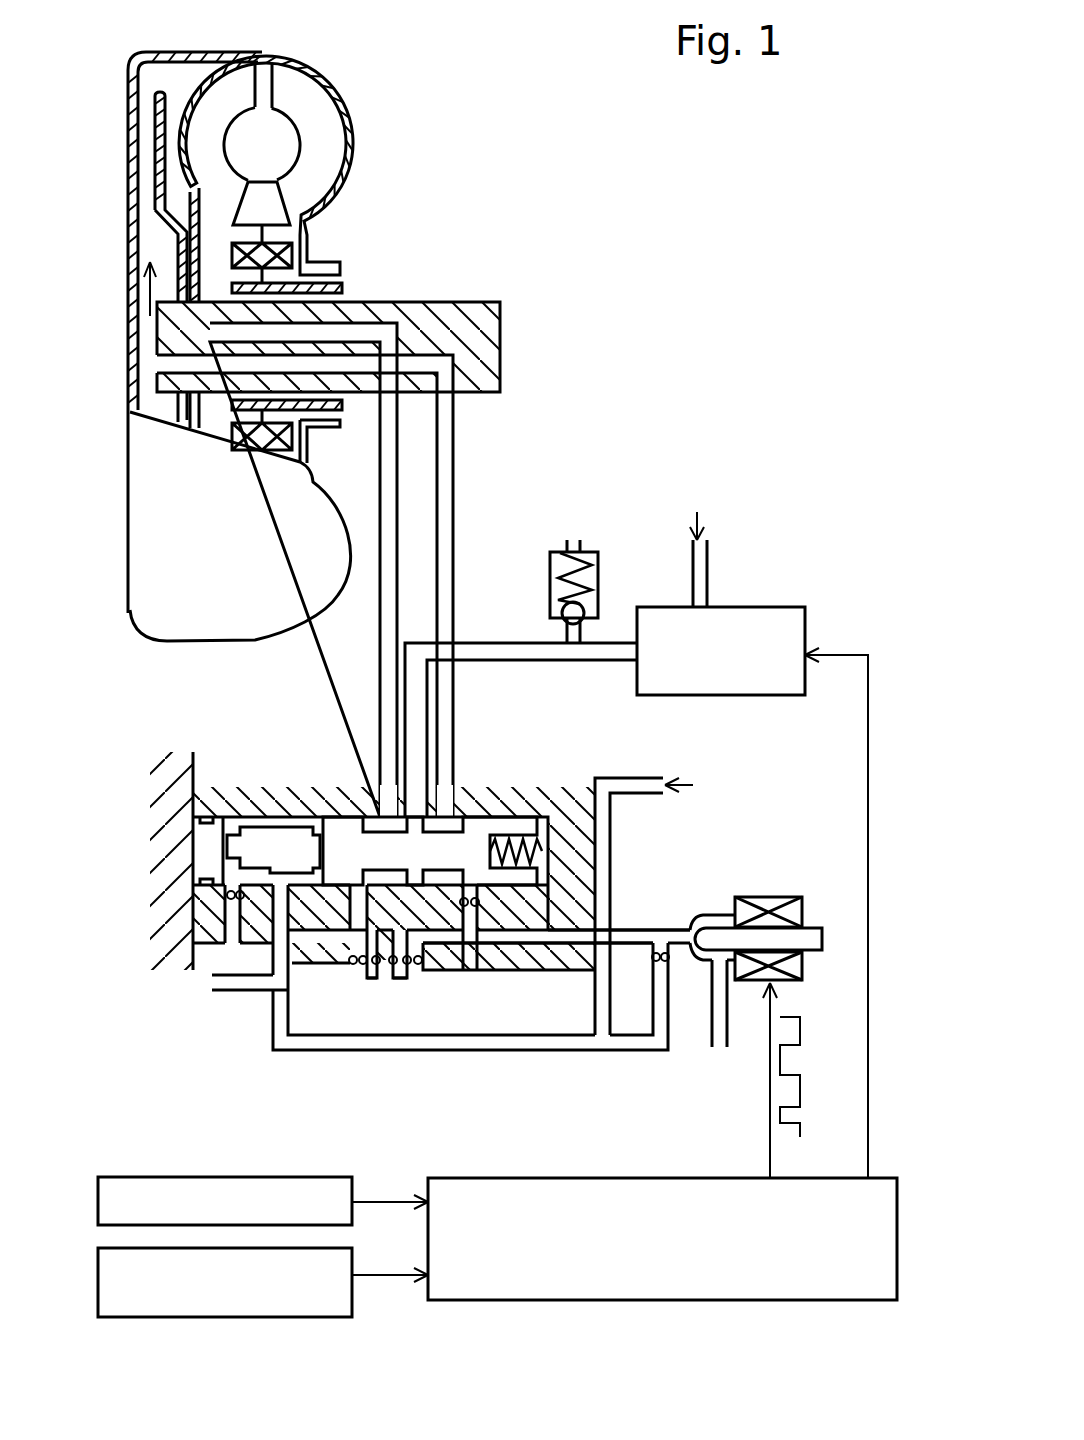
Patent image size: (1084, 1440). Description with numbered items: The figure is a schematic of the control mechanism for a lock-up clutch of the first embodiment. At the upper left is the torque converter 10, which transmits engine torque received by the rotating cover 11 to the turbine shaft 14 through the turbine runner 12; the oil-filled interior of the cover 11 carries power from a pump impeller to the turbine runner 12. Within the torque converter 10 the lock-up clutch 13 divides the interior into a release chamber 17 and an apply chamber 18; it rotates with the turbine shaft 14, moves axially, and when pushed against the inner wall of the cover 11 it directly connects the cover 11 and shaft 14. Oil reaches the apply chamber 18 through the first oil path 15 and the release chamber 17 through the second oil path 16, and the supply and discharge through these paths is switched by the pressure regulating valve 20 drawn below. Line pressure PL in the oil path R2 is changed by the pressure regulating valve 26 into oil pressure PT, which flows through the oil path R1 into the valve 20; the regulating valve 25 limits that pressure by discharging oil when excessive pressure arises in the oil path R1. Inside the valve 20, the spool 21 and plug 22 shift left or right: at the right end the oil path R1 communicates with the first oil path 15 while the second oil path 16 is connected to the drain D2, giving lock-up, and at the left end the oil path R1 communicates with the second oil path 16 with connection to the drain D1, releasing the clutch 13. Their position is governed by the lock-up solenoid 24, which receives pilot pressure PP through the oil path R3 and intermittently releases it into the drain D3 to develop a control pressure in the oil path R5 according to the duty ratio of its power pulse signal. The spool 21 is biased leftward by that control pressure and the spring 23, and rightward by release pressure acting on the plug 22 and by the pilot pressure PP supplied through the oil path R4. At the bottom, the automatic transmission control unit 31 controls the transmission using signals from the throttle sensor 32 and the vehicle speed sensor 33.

The torque converter 10 is at (392, 70).
The cover 11 is at (351, 143).
The turbine runner 12 is at (225, 150).
The lock-up clutch 13 is at (160, 102).
The turbine shaft 14 is at (420, 302).
The first oil path 15 is at (357, 300).
The second oil path 16 is at (357, 395).
The release chamber 17 is at (148, 225).
The apply chamber 18 is at (208, 250).
The pressure regulating valve 20 is at (533, 776).
The spool 21 is at (332, 820).
The plug 22 is at (285, 823).
The spring 23 is at (497, 838).
The lock-up solenoid 24 is at (768, 897).
The regulating valve 25 is at (598, 575).
The pressure regulating valve 26 is at (770, 695).
The automatic transmission control unit 31 is at (487, 1177).
The throttle sensor 32 is at (355, 1185).
The vehicle speed sensor 33 is at (355, 1258).
The oil path R1 is at (405, 678).
The oil path R2 is at (707, 562).
The oil path R3 is at (610, 830).
The oil path R4 is at (538, 1035).
The oil path R5 is at (635, 928).
The drain D1 is at (220, 993).
The drain D2 is at (473, 970).
The drain D3 is at (718, 1047).
The line pressure PL is at (694, 507).
The pilot pressure PP is at (702, 787).